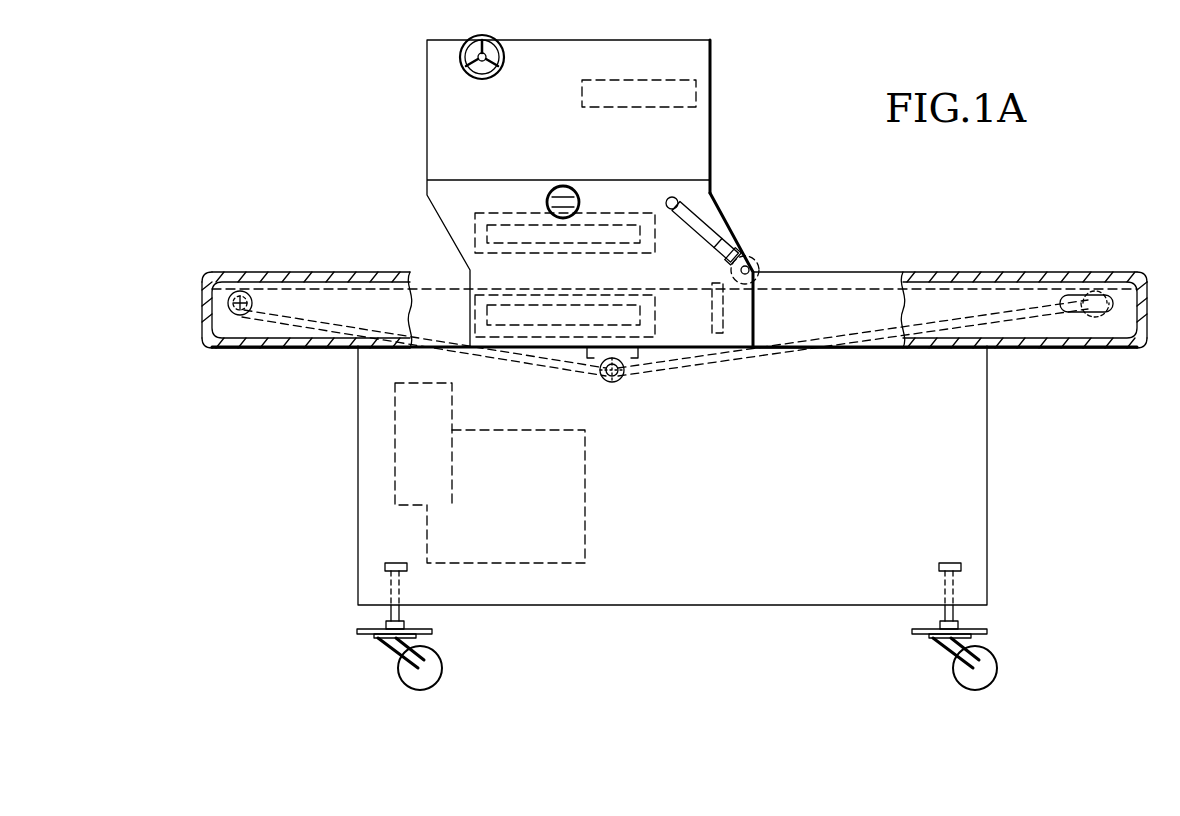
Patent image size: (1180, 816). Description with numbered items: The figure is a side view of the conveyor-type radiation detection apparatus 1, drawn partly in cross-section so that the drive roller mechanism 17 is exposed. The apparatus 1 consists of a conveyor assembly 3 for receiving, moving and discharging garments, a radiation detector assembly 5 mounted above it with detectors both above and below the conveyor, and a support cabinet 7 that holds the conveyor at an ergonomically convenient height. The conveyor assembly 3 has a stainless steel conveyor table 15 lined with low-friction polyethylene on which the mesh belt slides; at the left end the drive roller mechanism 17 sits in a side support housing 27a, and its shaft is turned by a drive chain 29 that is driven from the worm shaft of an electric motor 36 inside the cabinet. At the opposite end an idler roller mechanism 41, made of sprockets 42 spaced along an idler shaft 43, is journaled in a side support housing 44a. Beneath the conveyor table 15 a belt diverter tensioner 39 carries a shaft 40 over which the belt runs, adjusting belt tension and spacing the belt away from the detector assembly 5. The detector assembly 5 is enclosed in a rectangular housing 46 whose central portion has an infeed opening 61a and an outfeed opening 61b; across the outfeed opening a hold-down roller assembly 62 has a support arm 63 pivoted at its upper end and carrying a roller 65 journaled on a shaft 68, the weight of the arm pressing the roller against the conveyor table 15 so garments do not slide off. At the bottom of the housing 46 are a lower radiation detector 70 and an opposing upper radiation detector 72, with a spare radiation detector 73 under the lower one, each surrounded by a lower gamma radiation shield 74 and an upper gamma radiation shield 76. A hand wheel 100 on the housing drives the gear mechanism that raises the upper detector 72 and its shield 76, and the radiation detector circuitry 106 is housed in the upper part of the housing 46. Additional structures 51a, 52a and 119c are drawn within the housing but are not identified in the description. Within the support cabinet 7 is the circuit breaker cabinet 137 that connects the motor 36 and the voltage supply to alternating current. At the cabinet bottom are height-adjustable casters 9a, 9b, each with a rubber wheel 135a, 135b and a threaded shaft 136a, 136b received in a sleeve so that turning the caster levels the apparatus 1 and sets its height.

The conveyor-type radiation detection apparatus 1 is at (366, 140).
The conveyor assembly 3 is at (262, 268).
The radiation detector assembly 5 is at (715, 90).
The support cabinet 7 is at (346, 490).
The height-adjustable caster 9a is at (400, 662).
The height-adjustable caster 9b is at (955, 662).
The conveyor table 15 is at (307, 300).
The drive roller mechanism 17 is at (230, 303).
The support housing 27a is at (292, 350).
The drive chain 29 is at (313, 348).
The electric motor 36 is at (432, 448).
The belt diverter tensioner 39 is at (598, 372).
The shaft 40 is at (624, 386).
The idler roller mechanism 41 is at (1090, 312).
The sprocket 42 is at (1096, 290).
The idler shaft 43 is at (1115, 304).
The support housing 44a is at (972, 275).
The rectangular housing 46 is at (565, 124).
The carriage guide 51a is at (527, 210).
The guide roller 52a is at (581, 203).
The infeed opening 61a is at (428, 211).
The outfeed opening 61b is at (730, 212).
The hold-down roller assembly 62 is at (700, 203).
The support arm 63 is at (710, 245).
The roller 65 is at (760, 257).
The shaft 68 is at (752, 260).
The lower radiation detector 70 is at (475, 307).
The upper radiation detector 72 is at (468, 257).
The spare radiation detector 73 is at (585, 330).
The lower gamma radiation shield 74 is at (475, 332).
The upper gamma radiation shield 76 is at (480, 212).
The hand wheel 100 is at (483, 35).
The radiation detector circuitry 106 is at (628, 79).
The sensor 119c is at (726, 320).
The rubber wheel 135a is at (435, 683).
The rubber wheel 135b is at (990, 683).
The threaded shaft 136a is at (400, 590).
The threaded shaft 136b is at (945, 590).
The circuit breaker cabinet 137 is at (522, 506).